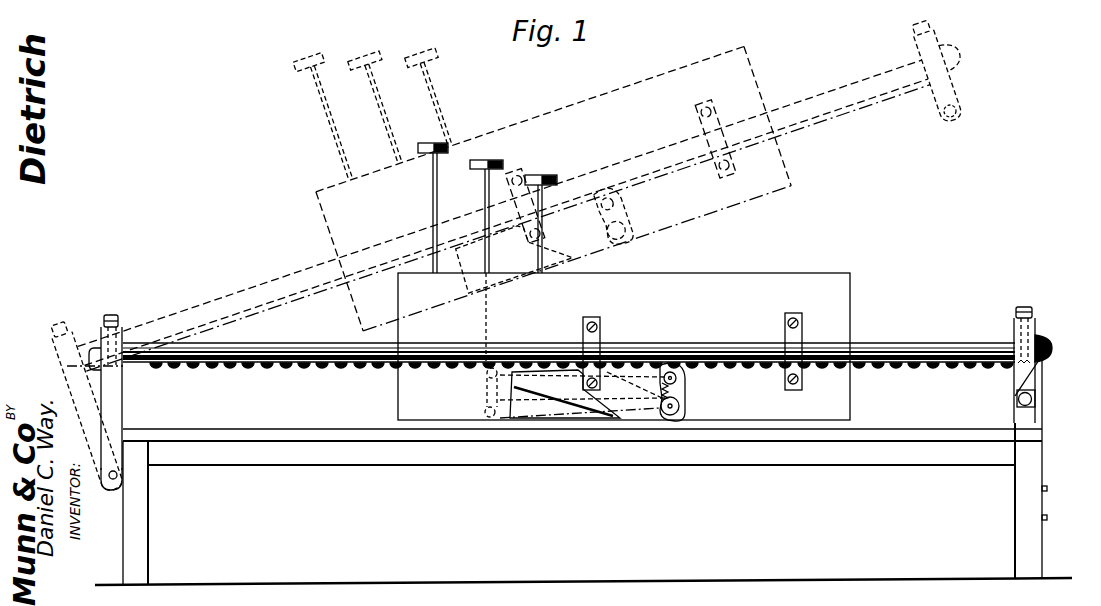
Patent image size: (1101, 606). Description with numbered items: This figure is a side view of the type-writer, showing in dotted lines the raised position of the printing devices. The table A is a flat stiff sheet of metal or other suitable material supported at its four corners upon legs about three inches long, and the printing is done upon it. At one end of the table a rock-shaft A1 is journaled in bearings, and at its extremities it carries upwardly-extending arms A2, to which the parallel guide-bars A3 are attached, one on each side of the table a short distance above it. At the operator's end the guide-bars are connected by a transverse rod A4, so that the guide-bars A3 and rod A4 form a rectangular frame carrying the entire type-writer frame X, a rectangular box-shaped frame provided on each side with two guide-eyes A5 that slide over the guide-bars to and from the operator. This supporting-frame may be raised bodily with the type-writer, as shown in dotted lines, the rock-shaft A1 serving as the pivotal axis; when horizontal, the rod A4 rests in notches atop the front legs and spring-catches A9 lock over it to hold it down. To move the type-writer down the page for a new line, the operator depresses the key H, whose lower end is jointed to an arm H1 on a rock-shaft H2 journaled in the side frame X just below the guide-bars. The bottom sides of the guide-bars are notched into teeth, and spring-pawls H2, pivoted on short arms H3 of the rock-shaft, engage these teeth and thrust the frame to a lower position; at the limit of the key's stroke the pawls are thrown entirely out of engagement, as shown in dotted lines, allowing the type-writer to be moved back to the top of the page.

The table A is at (583, 471).
The rock-shaft A1 is at (113, 491).
The upwardly-extending arms A2 is at (115, 395).
The guide-bars A3 is at (329, 345).
The transverse rod A4 is at (1036, 400).
The guide-eyes A5 is at (601, 341).
The spring-catches A9 is at (1036, 368).
The key H is at (485, 199).
The arm H1 is at (583, 394).
The rock-shaft H2 is at (648, 352).
The short arms H3 is at (683, 387).
The type-writer frame X is at (624, 346).